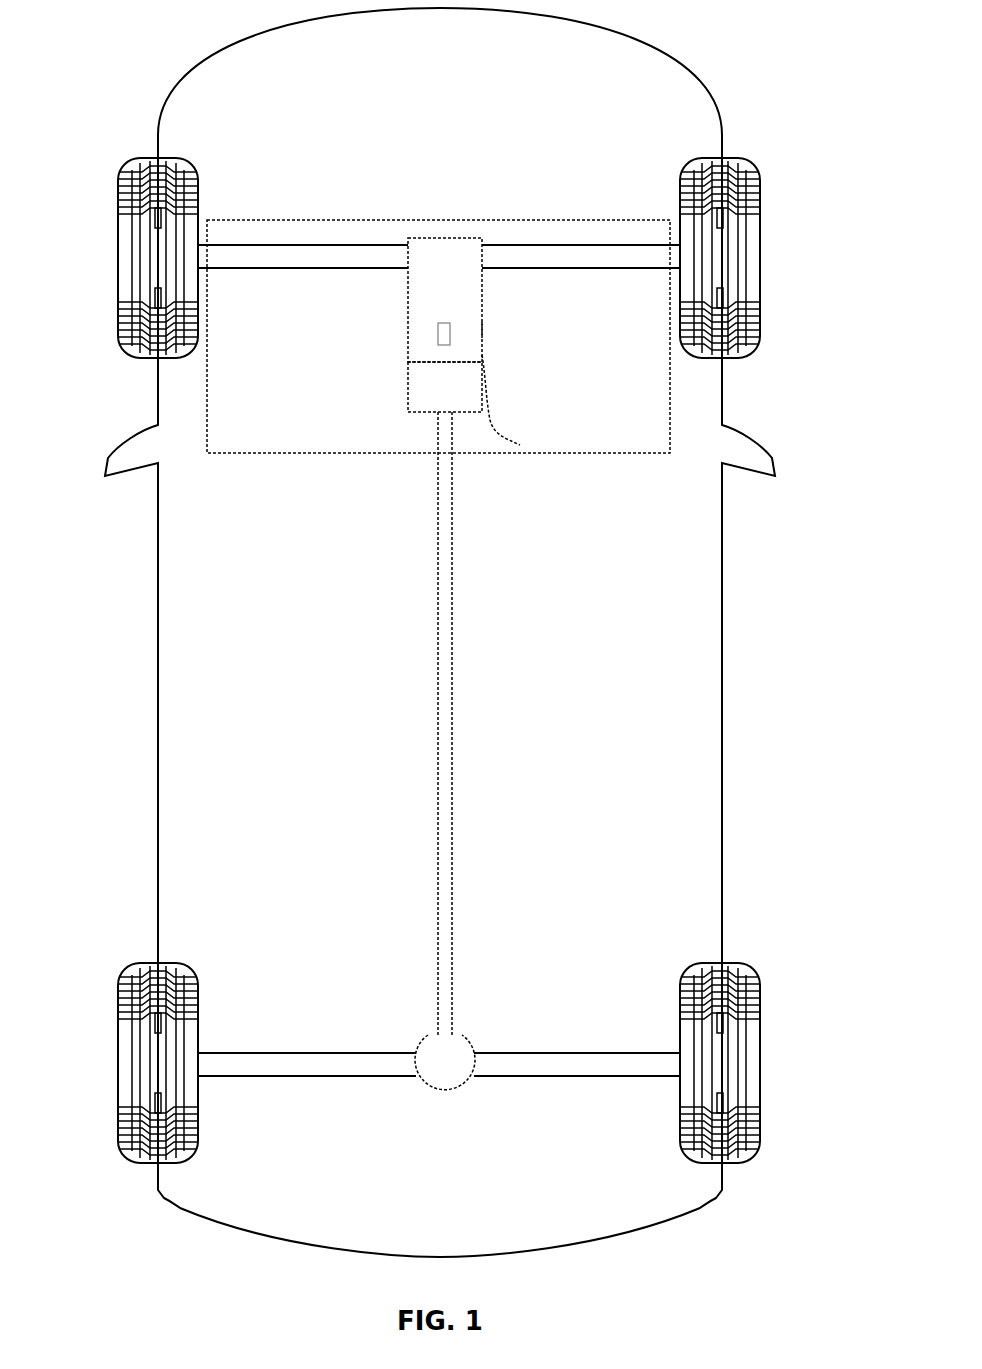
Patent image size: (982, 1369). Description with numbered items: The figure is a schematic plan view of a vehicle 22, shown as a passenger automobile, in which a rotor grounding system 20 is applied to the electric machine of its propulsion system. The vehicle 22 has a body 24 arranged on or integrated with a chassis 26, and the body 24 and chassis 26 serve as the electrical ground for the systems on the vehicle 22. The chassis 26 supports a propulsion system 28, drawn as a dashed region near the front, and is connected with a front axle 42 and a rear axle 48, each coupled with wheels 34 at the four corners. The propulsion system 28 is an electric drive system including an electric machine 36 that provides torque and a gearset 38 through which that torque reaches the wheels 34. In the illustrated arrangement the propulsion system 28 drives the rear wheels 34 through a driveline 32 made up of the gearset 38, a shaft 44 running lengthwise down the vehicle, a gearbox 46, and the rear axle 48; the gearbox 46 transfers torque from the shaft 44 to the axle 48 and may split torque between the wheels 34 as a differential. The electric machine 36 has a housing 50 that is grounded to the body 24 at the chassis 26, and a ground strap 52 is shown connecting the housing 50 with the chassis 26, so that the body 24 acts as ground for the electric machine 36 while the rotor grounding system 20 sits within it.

The rotor grounding system 20 is at (438, 343).
The vehicle 22 is at (688, 32).
The body 24 is at (158, 713).
The chassis 26 is at (617, 453).
The propulsion system 28 is at (510, 360).
The driveline 32 is at (503, 793).
The wheels 34 is at (118, 257).
The electric machine 36 is at (434, 309).
The gearset 38 is at (432, 399).
The front axle 42 is at (330, 258).
The shaft 44 is at (438, 779).
The gearbox 46 is at (432, 1047).
The rear axle 48 is at (348, 1062).
The housing 50 is at (482, 330).
The ground strap 52 is at (520, 445).